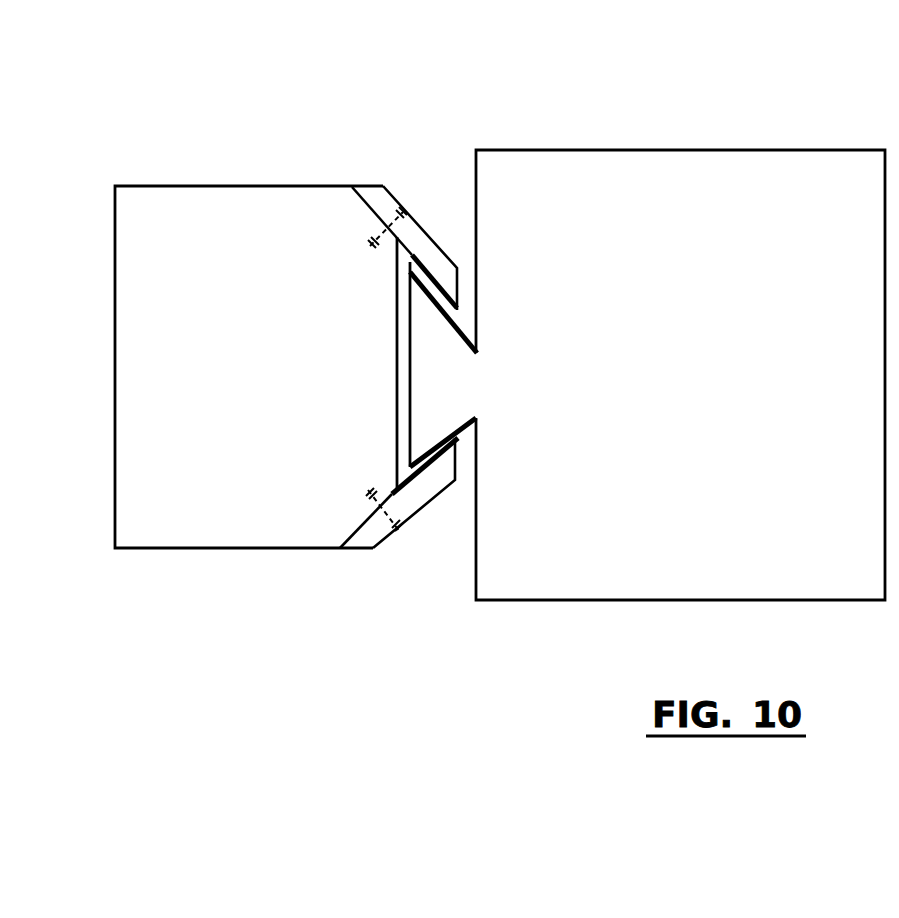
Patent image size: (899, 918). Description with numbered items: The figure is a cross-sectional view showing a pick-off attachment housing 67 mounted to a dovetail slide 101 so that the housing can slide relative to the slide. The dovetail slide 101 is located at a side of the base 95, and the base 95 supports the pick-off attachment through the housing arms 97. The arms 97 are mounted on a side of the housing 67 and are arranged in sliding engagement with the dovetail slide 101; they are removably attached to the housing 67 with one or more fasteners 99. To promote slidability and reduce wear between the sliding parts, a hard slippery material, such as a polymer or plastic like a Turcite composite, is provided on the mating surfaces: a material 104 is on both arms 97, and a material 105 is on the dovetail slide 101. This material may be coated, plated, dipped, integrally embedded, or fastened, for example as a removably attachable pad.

The pick-off attachment housing 67 is at (289, 186).
The base 95 is at (826, 150).
The housing arms 97 is at (437, 258).
The fasteners 99 is at (365, 240).
The dovetail slide 101 is at (458, 383).
The material 104 is at (426, 244).
The material 105 is at (460, 322).